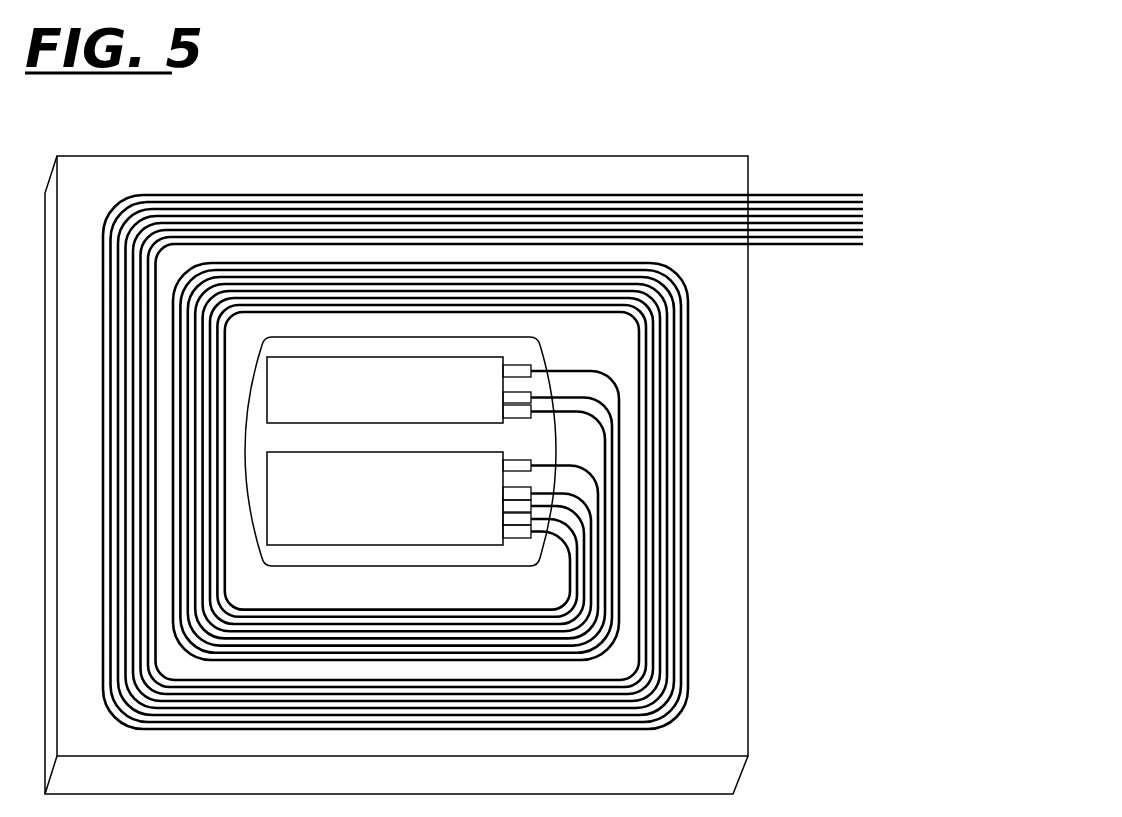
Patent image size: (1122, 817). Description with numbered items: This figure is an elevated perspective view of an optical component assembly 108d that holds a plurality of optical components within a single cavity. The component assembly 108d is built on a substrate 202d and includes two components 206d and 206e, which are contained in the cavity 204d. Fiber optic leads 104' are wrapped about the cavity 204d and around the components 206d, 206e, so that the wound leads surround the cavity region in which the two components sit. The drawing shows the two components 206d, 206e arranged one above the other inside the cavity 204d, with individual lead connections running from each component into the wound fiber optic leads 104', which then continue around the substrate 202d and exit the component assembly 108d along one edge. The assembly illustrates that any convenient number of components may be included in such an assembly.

The component assembly 108d is at (692, 140).
The substrate 202d is at (722, 614).
The antenna coil 104' is at (483, 418).
The cavity 204d is at (375, 340).
The component 206d is at (399, 390).
The component 206e is at (399, 498).